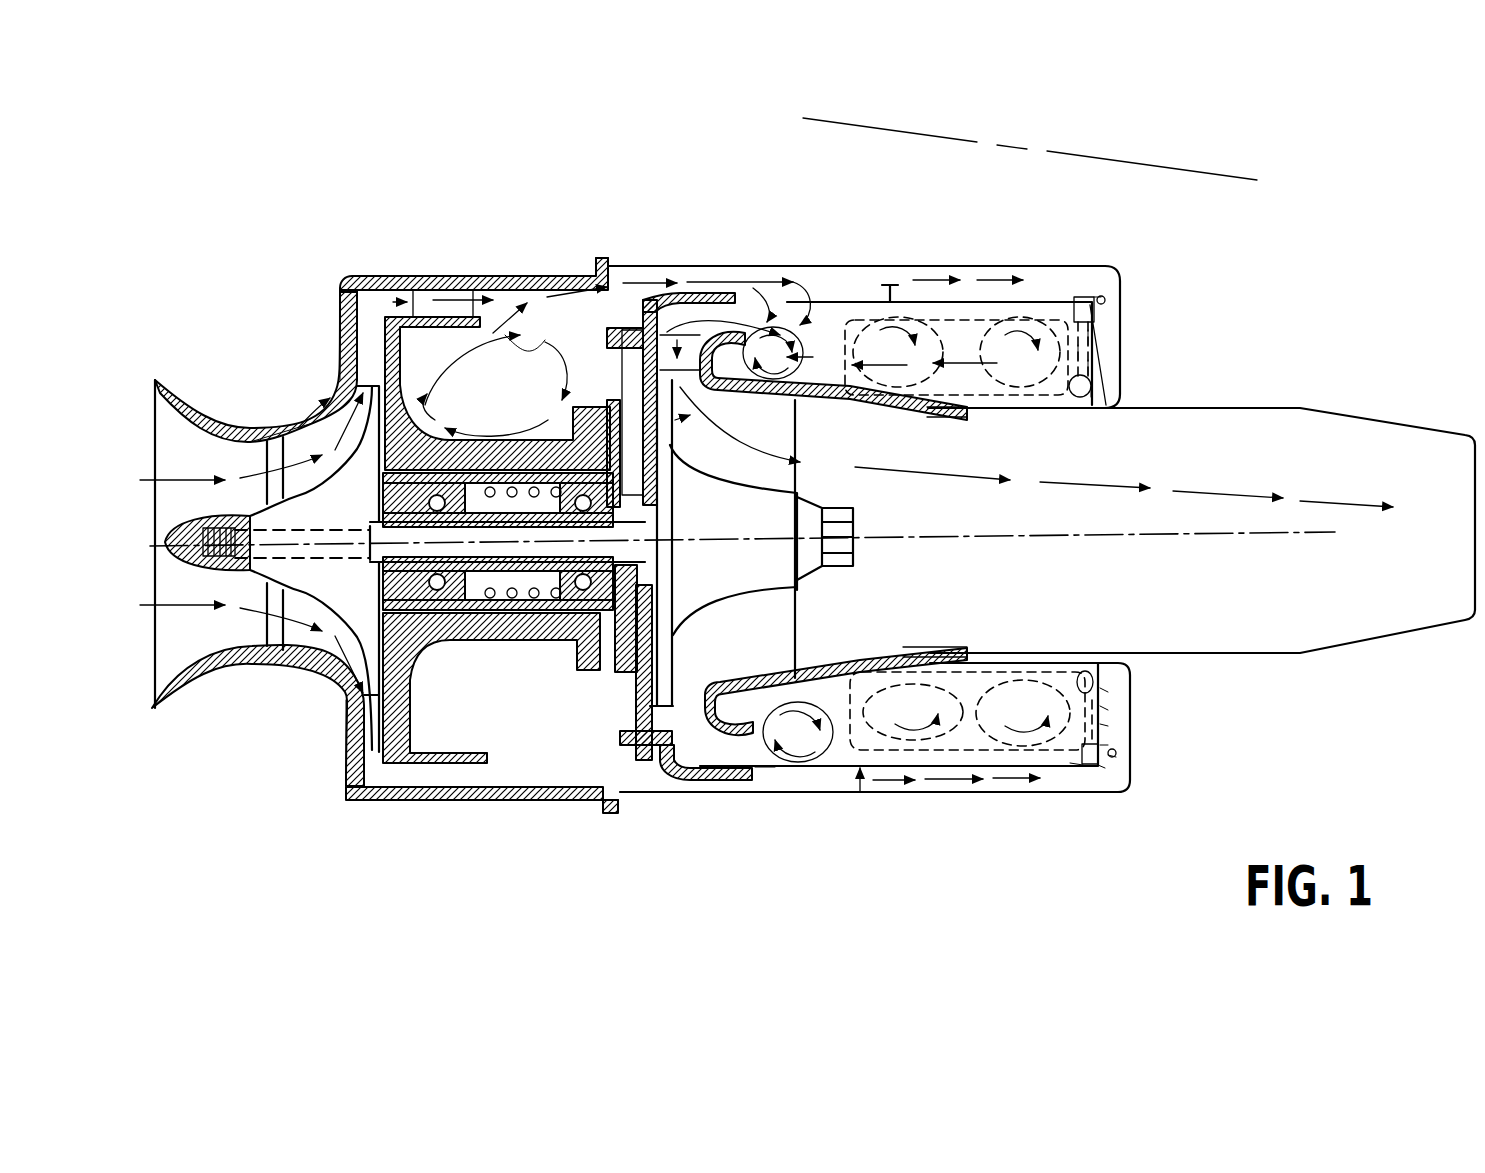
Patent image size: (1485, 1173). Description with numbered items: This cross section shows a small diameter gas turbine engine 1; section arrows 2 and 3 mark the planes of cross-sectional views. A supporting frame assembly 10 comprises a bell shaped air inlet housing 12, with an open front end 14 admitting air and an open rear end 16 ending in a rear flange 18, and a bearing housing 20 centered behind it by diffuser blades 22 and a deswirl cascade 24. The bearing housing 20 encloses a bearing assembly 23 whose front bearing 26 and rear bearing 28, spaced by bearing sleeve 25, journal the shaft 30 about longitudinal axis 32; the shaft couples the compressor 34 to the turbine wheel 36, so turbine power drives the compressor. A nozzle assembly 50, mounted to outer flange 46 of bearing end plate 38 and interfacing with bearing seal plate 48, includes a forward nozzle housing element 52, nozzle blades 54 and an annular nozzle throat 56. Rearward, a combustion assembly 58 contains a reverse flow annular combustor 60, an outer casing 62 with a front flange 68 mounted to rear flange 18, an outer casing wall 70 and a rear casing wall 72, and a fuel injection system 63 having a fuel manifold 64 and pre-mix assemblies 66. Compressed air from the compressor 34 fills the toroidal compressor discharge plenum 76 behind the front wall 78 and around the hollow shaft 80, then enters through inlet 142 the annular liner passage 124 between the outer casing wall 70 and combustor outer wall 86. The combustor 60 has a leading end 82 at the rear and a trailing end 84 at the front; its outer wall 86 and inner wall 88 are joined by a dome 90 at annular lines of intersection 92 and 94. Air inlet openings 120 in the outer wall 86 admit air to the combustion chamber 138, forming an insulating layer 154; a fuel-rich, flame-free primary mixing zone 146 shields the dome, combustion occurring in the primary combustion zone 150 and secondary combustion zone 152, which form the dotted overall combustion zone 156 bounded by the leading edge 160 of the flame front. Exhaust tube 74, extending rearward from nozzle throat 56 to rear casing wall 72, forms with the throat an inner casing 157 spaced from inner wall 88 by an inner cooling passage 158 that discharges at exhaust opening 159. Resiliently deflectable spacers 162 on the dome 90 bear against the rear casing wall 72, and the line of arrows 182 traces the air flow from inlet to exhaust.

The gas turbine engine 1 is at (328, 205).
The section line 2 is at (803, 118).
The section line 3 is at (1030, 258).
The supporting frame assembly 10 is at (370, 807).
The air inlet housing 12 is at (252, 655).
The open front end 14 is at (150, 700).
The open rear end 16 is at (653, 802).
The rear flange 18 is at (600, 813).
The bearing housing 20 is at (396, 800).
The diffuser blades 22 is at (370, 740).
The bearing assembly 23 is at (328, 637).
The deswirl cascade 24 is at (433, 800).
The bearing sleeve 25 is at (483, 640).
The front bearing 26 is at (455, 640).
The rear bearing 28 is at (523, 640).
The shaft 30 is at (523, 552).
The longitudinal axis 32 is at (1233, 533).
The compressor 34 is at (305, 648).
The turbine wheel 36 is at (748, 573).
The bearing end plate 38 is at (602, 655).
The outer flange 46 is at (672, 698).
The bearing seal plate 48 is at (673, 668).
The nozzle assembly 50 is at (735, 795).
The forward nozzle housing element 52 is at (683, 797).
The nozzle blades 54 is at (707, 797).
The annular nozzle throat 56 is at (925, 767).
The combustion assembly 58 is at (978, 797).
The reverse flow annular combustor 60 is at (865, 797).
The outer casing 62 is at (1012, 797).
The fuel injection system 63 is at (1105, 768).
The fuel manifold 64 is at (1113, 755).
The pre-mix assemblies 66 is at (1103, 745).
The front flange 68 is at (625, 808).
The outer casing wall 70 is at (866, 330).
The rear casing wall 72 is at (1103, 706).
The exhaust tube 74 is at (1368, 645).
The compressor discharge plenum 76 is at (438, 340).
The front wall 78 is at (457, 800).
The hollow shaft 80 is at (480, 800).
The leading end 82 is at (1100, 692).
The trailing end 84 is at (770, 767).
The outer wall 86 is at (818, 300).
The inner wall 88 is at (1075, 663).
The dome 90 is at (1103, 725).
The annular line of intersection 92 is at (1112, 405).
The annular line of intersection 94 is at (1098, 300).
The air inlet openings 120 is at (1077, 767).
The annular liner passage 124 is at (725, 290).
The combustion chamber 138 is at (970, 320).
The inlet 142 is at (640, 300).
The primary "A" mixing zone 146 is at (1108, 368).
The primary "B" combustion zone 150 is at (1052, 310).
The secondary combustion zone 152 is at (940, 330).
The insulating layer 154 is at (1000, 330).
The overall combustion zone 156 is at (826, 300).
The inner casing 157 is at (983, 660).
The inner cooling passage 158 is at (1015, 663).
The exhaust opening 159 is at (905, 655).
The leading edge 160 is at (1120, 345).
The resiliently deflectable spacers 162 is at (1108, 335).
The line of arrows 182 is at (505, 335).